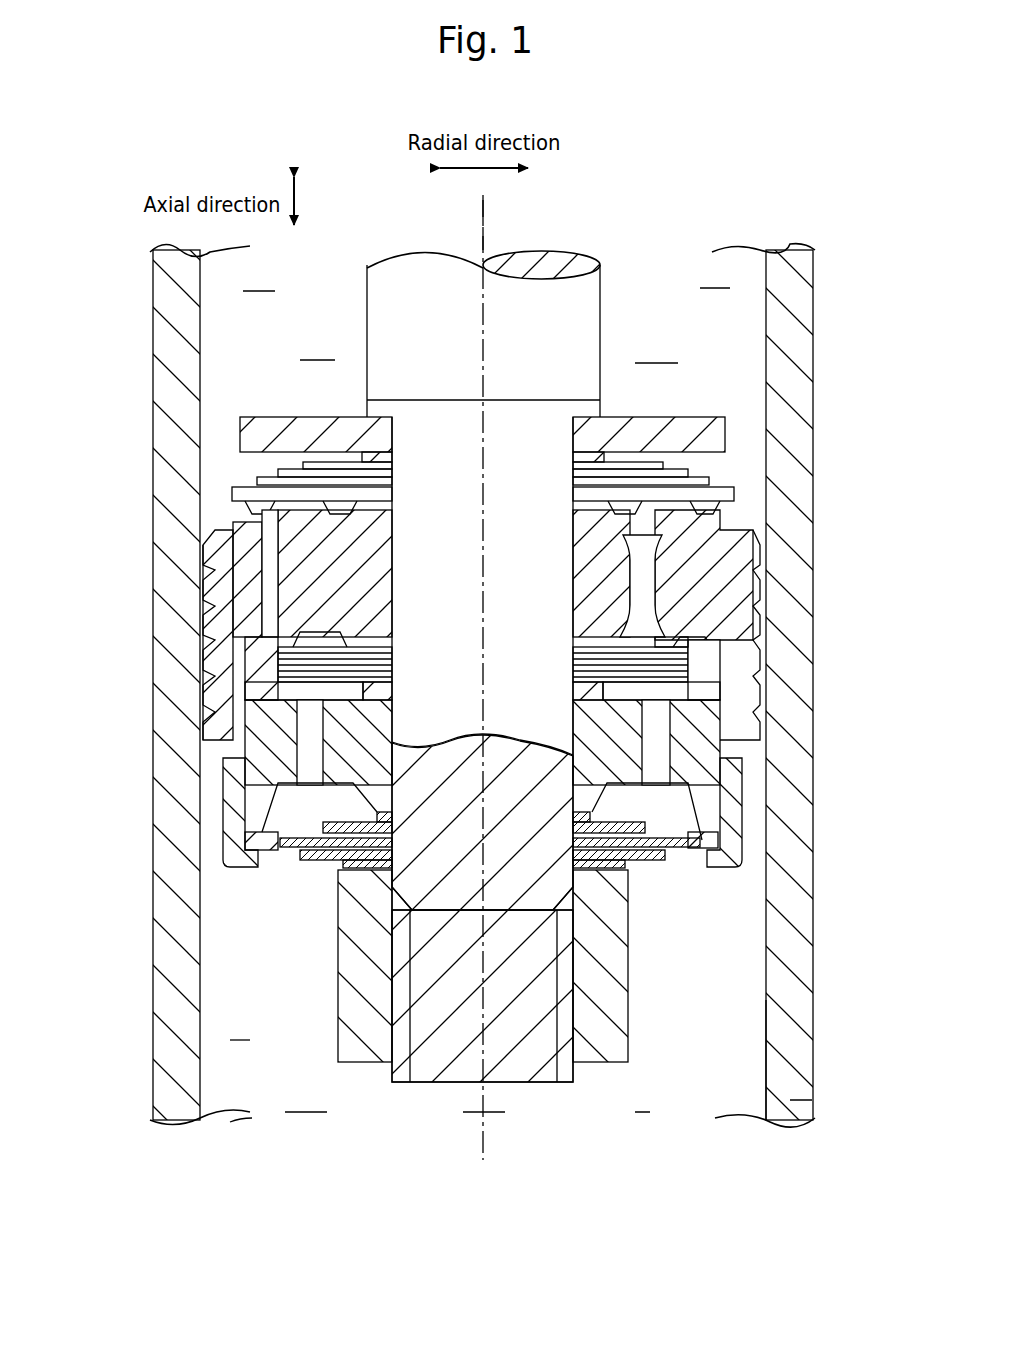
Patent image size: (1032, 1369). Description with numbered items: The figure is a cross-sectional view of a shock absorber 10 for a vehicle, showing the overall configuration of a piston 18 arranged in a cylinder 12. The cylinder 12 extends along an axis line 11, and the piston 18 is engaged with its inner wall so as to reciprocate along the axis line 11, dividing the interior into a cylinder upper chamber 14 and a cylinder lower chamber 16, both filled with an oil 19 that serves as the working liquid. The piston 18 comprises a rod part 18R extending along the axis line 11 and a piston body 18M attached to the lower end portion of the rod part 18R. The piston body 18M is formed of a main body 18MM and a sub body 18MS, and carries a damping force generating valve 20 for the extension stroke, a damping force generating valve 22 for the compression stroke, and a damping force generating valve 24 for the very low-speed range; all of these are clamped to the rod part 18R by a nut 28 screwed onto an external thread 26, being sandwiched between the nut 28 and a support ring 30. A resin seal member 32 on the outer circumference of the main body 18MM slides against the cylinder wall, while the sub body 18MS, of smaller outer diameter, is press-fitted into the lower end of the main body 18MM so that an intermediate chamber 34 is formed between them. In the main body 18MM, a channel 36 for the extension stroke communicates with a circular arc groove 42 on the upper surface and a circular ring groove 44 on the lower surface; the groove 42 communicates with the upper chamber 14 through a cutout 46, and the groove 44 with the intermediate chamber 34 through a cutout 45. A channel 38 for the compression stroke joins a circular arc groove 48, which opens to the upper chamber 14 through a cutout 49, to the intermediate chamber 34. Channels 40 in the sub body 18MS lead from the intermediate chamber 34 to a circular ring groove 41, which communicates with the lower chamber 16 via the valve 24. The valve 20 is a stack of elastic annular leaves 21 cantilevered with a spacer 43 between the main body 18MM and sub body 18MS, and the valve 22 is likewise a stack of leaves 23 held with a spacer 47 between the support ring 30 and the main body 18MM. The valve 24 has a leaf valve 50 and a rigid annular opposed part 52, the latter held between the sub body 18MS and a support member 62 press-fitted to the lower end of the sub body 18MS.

The shock absorber 10 is at (780, 223).
The axis line 11 is at (490, 205).
The cylinder 12 is at (165, 296).
The cylinder upper chamber 14 is at (748, 373).
The cylinder lower chamber 16 is at (740, 1050).
The piston 18 is at (386, 243).
The rod part 18R is at (576, 328).
The piston body 18M is at (178, 572).
The main body 18MM is at (735, 572).
The sub body 18MS is at (720, 783).
The oil 19 is at (652, 272).
The damping force generating valve for an extension stroke 20 is at (700, 682).
The leaves 21 is at (630, 672).
The damping force generating valve for a compression stroke 22 is at (235, 480).
The leaves 23 is at (300, 497).
The damping force generating valve for the very low-speed range 24 is at (700, 868).
The external thread 26 is at (583, 1052).
The nut 28 is at (372, 1052).
The support ring 30 is at (262, 420).
The seal member 32 is at (205, 640).
The intermediate chamber 34 is at (262, 682).
The channel for the extension stroke 36 is at (640, 578).
The channel for the compression stroke 38 is at (270, 583).
The channels 40 is at (300, 746).
The circular ring groove 41 is at (290, 790).
The circular arc groove 42 is at (640, 522).
The spacer 43 is at (340, 690).
The circular ring groove 44 is at (345, 636).
The cutout 45 is at (725, 642).
The cutout 46 is at (722, 510).
The spacer 47 is at (578, 466).
The circular arc groove 48 is at (272, 522).
The cutout 49 is at (242, 507).
The leaf valve 50 is at (660, 875).
The opposed part 52 is at (712, 840).
The support member 62 is at (250, 836).